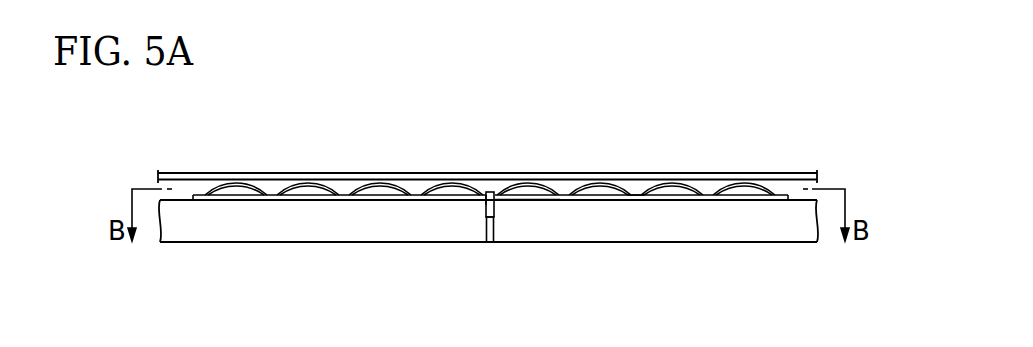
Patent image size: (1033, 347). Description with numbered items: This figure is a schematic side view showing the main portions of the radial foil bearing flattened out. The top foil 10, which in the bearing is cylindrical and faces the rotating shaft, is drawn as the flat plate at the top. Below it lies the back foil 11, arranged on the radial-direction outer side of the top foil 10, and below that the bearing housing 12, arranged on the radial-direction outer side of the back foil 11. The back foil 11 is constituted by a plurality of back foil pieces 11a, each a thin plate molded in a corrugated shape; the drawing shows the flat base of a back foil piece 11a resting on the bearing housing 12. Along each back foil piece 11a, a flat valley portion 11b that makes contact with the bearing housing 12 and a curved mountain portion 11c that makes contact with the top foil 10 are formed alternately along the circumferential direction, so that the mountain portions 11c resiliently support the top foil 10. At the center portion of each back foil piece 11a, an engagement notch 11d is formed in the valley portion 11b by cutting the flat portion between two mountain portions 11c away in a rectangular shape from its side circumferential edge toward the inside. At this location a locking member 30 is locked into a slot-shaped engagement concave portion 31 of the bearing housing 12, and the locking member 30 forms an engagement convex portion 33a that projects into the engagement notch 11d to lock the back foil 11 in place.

The top foil 10 is at (415, 172).
The back foil 11 is at (490, 221).
The back foil piece 11a is at (540, 211).
The valley portion 11b is at (636, 194).
The mountain portion 11c is at (598, 186).
The engagement notch 11d is at (489, 203).
The bearing housing 12 is at (601, 225).
The locking member 30 is at (514, 219).
The engagement concave portion 31 is at (510, 212).
The engagement convex portion 33a is at (491, 191).